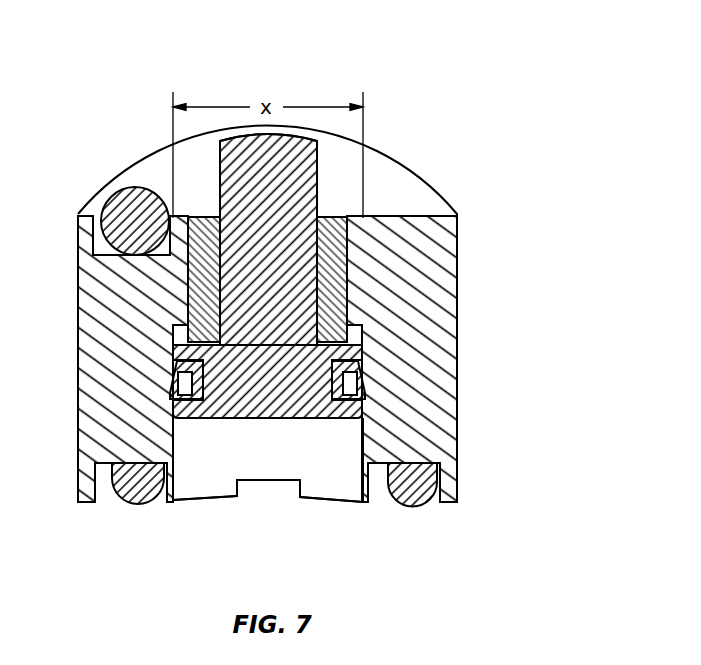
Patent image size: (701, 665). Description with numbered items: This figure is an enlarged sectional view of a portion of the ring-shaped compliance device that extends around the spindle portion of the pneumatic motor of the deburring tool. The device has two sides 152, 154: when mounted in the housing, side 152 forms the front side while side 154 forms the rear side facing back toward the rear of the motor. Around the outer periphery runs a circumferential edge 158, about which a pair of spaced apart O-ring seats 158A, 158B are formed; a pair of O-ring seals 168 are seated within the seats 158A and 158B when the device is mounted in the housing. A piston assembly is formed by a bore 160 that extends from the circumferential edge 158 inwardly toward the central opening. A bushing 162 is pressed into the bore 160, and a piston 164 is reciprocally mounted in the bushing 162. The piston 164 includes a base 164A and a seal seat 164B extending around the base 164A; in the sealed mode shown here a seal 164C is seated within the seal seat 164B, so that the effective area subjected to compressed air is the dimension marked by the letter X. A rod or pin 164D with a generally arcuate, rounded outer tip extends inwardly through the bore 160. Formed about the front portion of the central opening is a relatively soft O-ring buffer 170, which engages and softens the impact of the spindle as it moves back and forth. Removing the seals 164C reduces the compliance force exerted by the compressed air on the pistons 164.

The side 152 is at (78, 343).
The side 154 is at (457, 297).
The circumferential edge 158 is at (207, 502).
The O-ring seat 158A is at (103, 470).
The O-ring seat 158B is at (378, 466).
The bore 160 is at (333, 463).
The bushing 162 is at (347, 217).
The piston 164 is at (315, 180).
The base 164A is at (288, 397).
The seal seat 164B is at (358, 375).
The seal 164C is at (360, 386).
The rod or pin 164D is at (286, 160).
The O-ring seal 168 is at (138, 497).
The O-ring buffer 170 is at (132, 207).